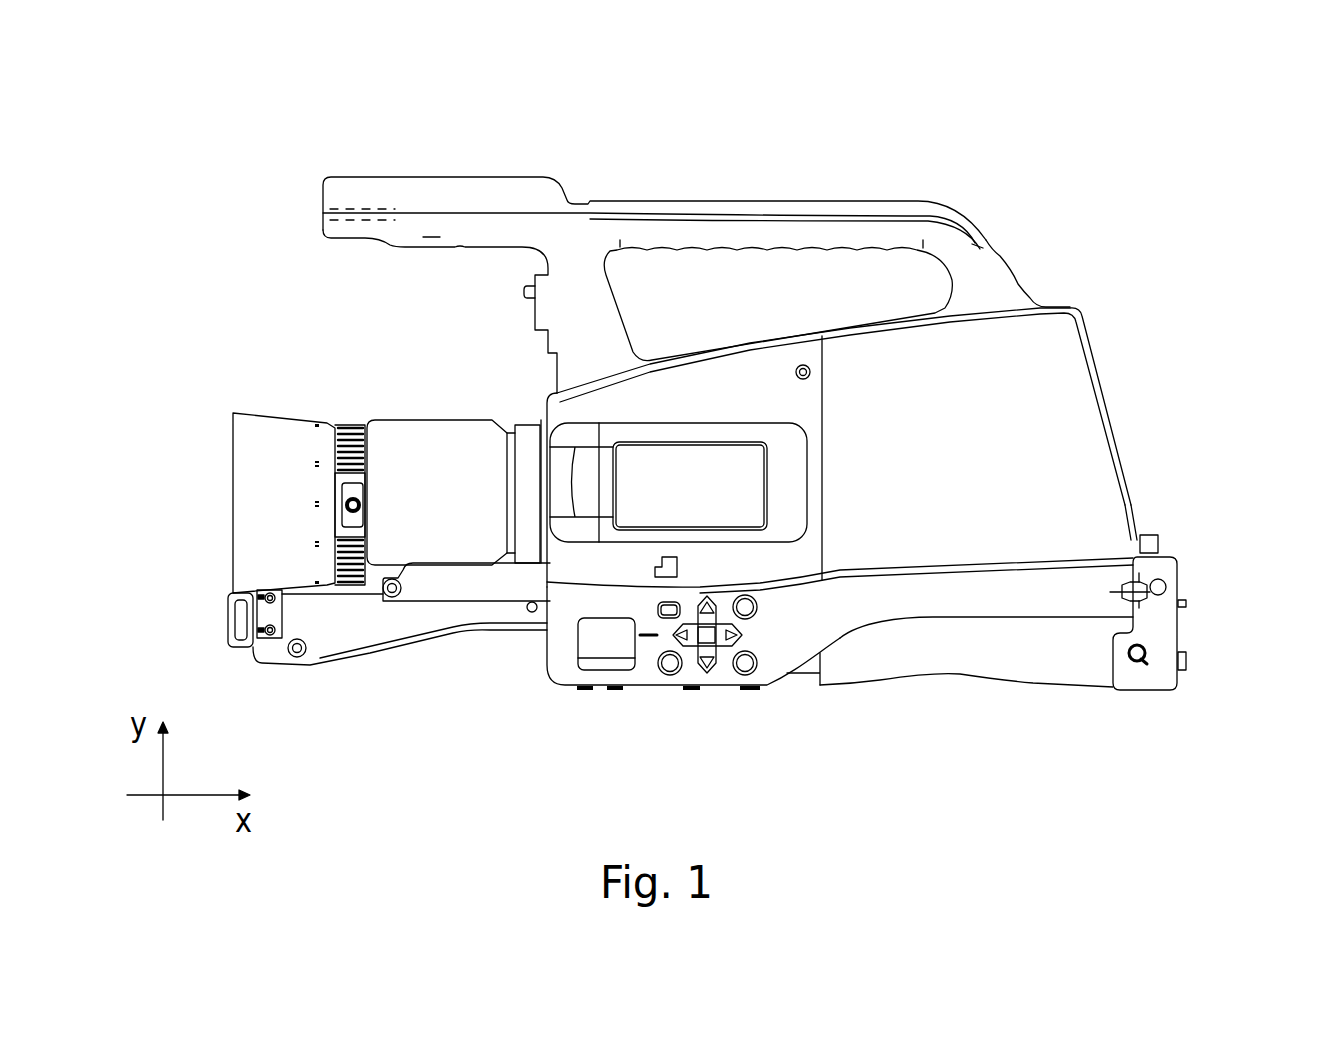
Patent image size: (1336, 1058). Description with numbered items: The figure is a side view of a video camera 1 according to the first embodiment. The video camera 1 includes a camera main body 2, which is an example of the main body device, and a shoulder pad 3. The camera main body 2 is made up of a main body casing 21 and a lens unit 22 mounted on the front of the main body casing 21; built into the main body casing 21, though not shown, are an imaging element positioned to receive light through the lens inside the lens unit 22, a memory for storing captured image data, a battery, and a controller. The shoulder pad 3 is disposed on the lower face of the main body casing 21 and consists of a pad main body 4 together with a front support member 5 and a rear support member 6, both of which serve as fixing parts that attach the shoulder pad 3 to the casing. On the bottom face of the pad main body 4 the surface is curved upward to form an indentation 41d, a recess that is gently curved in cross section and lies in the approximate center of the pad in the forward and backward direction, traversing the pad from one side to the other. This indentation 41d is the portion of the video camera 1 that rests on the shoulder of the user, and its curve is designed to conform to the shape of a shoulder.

The video camera 1 is at (1070, 143).
The camera main body 2 is at (1097, 333).
The main body casing 21 is at (1085, 468).
The lens unit 22 is at (302, 410).
The shoulder pad 3 is at (1212, 636).
The pad main body 4 is at (893, 653).
The indentation 41d is at (960, 686).
The front support member 5 is at (803, 680).
The rear support member 6 is at (1165, 683).